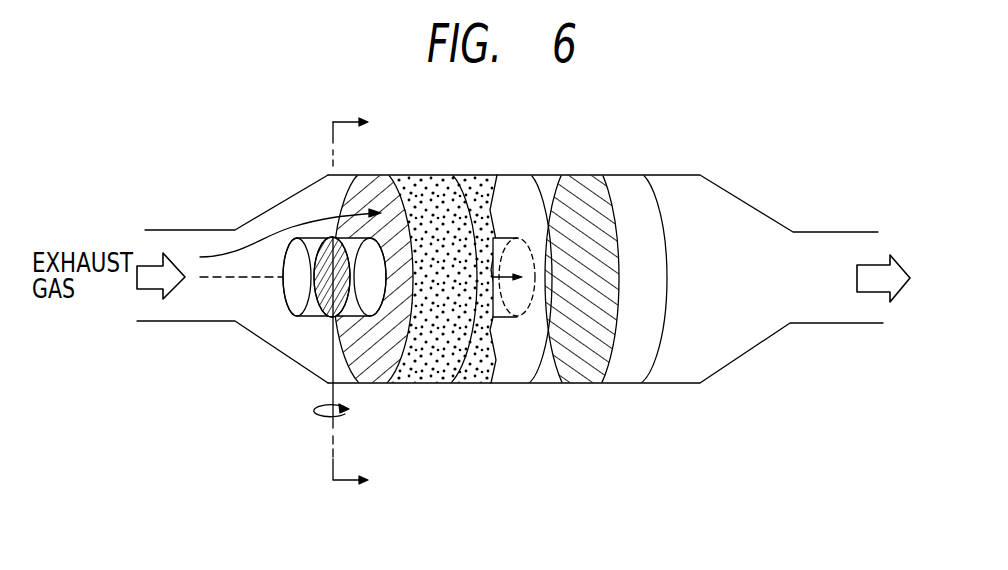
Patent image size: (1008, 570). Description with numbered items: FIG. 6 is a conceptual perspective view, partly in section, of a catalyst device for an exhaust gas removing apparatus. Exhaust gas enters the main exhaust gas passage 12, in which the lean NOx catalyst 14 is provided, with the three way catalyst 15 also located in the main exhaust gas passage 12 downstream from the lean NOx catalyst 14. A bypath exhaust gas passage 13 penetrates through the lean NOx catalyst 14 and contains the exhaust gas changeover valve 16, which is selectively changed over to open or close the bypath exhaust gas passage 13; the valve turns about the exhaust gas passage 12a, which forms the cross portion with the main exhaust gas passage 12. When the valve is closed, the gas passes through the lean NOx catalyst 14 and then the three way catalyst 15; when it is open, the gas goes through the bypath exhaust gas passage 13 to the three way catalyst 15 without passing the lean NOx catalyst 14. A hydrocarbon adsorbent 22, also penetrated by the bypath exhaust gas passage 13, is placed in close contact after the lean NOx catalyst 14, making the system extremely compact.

The main exhaust gas passage 12 is at (173, 229).
The exhaust gas passage 12a is at (316, 363).
The bypath exhaust gas passage 13 is at (317, 237).
The lean NOx catalyst 14 is at (432, 370).
The three way catalyst 15 is at (612, 376).
The exhaust gas changeover valve 16 is at (318, 321).
The hydrocarbon adsorbent 22 is at (472, 192).